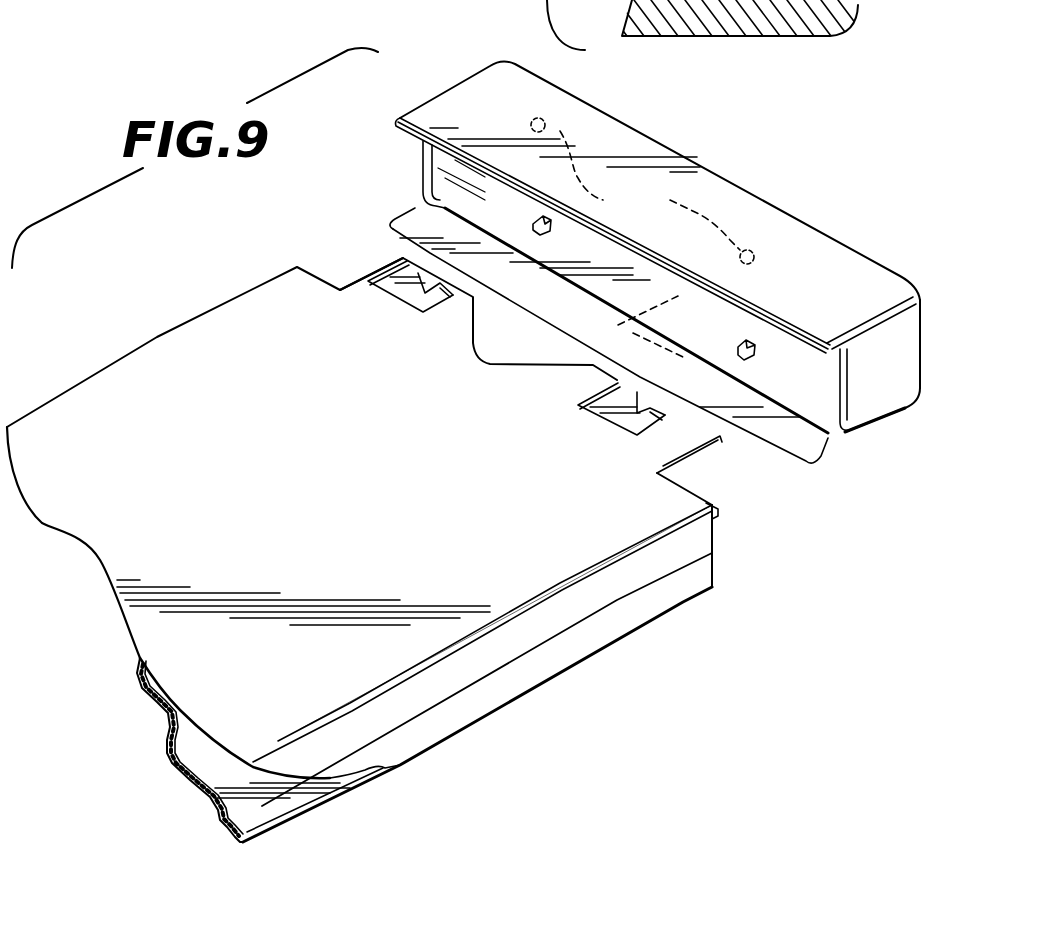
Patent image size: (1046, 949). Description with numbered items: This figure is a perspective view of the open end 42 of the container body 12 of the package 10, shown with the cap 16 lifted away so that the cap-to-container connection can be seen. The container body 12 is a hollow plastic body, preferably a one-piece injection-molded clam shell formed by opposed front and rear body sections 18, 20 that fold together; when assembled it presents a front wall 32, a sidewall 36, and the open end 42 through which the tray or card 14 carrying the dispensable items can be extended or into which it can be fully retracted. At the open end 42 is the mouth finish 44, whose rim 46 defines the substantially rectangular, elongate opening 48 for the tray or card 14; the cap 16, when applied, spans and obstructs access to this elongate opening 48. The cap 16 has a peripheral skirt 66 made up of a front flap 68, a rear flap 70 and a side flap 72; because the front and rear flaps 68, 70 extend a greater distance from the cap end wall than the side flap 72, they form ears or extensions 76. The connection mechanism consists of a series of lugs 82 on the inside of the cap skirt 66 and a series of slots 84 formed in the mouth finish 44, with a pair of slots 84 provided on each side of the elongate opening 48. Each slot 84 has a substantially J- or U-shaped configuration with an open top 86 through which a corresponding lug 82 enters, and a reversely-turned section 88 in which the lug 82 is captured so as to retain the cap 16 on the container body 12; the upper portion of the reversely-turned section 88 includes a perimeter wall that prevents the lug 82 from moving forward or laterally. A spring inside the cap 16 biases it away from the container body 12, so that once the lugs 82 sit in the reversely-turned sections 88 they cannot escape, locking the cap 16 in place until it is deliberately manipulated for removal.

The package 10 is at (578, 652).
The container body 12 is at (450, 727).
The tray or card 14 is at (353, 782).
The cap 16 is at (709, 130).
The front body section 18 is at (468, 663).
The rear body section 20 is at (528, 692).
The front wall 32 is at (372, 536).
The sidewall 36 is at (627, 625).
The open end 42 is at (280, 277).
The mouth finish 44 is at (707, 447).
The rim 46 is at (713, 565).
The elongate opening 48 is at (726, 541).
The peripheral skirt 66 is at (810, 263).
The front flap 68 is at (503, 83).
The rear flap 70 is at (807, 447).
The side flap 72 is at (890, 397).
The ears or extensions 76 is at (412, 208).
The lugs 82 is at (567, 213).
The slots 84 is at (403, 297).
The open top 86 is at (380, 262).
The reversely-turned section 88 is at (430, 303).